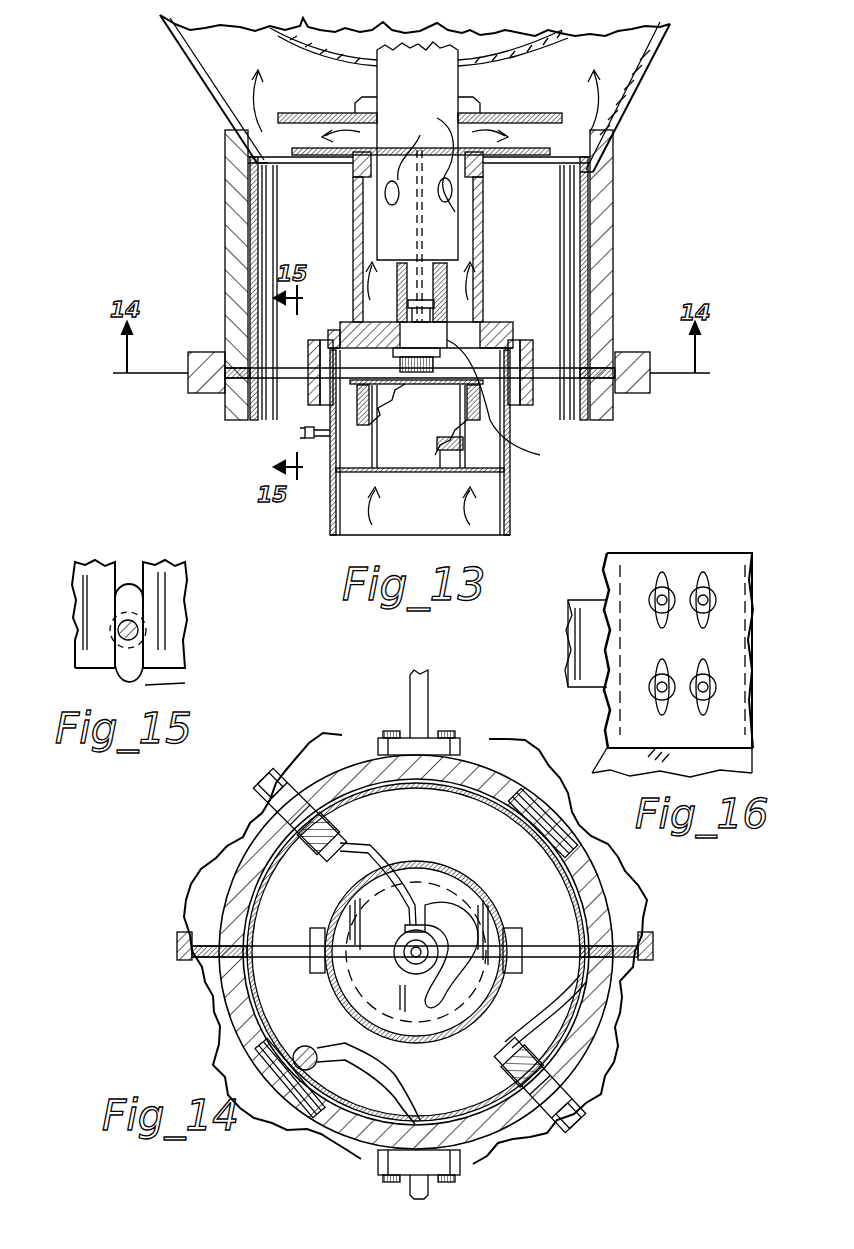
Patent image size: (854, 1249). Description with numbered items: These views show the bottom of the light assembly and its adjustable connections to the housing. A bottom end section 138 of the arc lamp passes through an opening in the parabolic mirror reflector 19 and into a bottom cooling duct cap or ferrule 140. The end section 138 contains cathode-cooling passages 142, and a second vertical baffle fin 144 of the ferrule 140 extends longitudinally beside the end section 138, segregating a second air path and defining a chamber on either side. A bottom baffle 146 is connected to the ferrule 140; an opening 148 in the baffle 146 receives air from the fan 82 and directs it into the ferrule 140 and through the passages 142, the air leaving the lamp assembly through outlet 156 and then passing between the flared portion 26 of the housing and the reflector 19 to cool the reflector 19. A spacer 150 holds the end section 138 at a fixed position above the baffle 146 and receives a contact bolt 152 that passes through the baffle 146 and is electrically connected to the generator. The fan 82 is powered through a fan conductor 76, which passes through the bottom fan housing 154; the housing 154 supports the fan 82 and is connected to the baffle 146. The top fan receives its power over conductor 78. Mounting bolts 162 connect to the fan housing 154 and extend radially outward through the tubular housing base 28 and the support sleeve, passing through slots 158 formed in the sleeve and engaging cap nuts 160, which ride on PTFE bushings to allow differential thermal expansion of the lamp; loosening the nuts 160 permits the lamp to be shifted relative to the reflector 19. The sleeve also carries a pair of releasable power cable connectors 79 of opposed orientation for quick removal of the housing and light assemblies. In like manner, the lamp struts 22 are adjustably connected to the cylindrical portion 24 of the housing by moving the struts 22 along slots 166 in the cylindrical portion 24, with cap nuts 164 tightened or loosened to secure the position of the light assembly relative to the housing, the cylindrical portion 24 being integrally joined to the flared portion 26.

In FIG. 13, the parabolic mirror reflector 19 is at (517, 57).
In FIG. 13, the bottom end section 138 is at (440, 80).
In FIG. 13, the cathode-cooling passages 142 is at (426, 159).
In FIG. 13, the outlet 156 is at (530, 137).
In FIG. 13, the tubular housing base 28 is at (225, 207).
In FIG. 15, the tubular housing base 28 is at (170, 605).
In FIG. 14, the tubular housing base 28 is at (490, 777).
In FIG. 13, the bottom cooling duct cap or ferrule 140 is at (485, 196).
In FIG. 13, the second vertical baffle fin 144 is at (425, 232).
In FIG. 13, the spacer 150 is at (468, 265).
In FIG. 13, the bottom baffle 146 is at (495, 325).
In FIG. 14, the bottom baffle 146 is at (345, 988).
In FIG. 13, the mounting bolts 162 is at (280, 375).
In FIG. 15, the mounting bolts 162 is at (172, 675).
In FIG. 13, the cap nuts 160 is at (207, 352).
In FIG. 13, the bottom fan housing 154 is at (510, 508).
In FIG. 14, the bottom fan housing 154 is at (478, 829).
In FIG. 13, the contact bolt 152 is at (482, 408).
In FIG. 13, the fan 82 is at (430, 441).
In FIG. 13, the opening 148 is at (533, 428).
In FIG. 14, the opening 148 is at (463, 909).
In FIG. 13, the fan conductor 76 is at (300, 432).
In FIG. 14, the fan conductor 76 is at (370, 842).
In FIG. 15, the slots 158 is at (118, 675).
In FIG. 16, the cylindrical portion 24 is at (735, 565).
In FIG. 16, the flared portion 26 is at (635, 765).
In FIG. 16, the lamp struts 22 is at (575, 625).
In FIG. 16, the cap nuts 164 is at (677, 583).
In FIG. 16, the slots 166 is at (703, 612).
In FIG. 14, the releasable power cable connectors 79 is at (300, 776).
In FIG. 14, the conductor 78 is at (555, 1002).